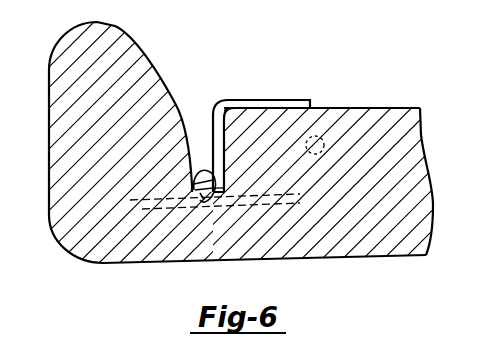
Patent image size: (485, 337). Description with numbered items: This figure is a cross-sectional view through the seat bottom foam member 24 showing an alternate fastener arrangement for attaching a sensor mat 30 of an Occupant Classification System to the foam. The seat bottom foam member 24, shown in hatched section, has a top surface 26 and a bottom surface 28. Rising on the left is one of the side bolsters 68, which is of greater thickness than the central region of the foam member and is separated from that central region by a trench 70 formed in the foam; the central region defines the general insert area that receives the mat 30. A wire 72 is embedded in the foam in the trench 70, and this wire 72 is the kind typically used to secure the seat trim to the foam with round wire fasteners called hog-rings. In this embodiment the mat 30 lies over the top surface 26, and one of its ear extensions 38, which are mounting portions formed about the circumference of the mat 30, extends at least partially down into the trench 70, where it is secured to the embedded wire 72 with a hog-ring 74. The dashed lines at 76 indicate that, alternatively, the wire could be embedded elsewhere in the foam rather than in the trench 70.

The seat bottom foam member 24 is at (422, 146).
The top surface 26 is at (373, 108).
The bottom surface 28 is at (343, 259).
The mat 30 is at (302, 100).
The ear extensions 38 is at (216, 179).
The side bolsters 68 is at (147, 83).
The trench 70 is at (203, 156).
The wire 72 is at (168, 207).
The hog-ring 74 is at (209, 200).
The dashed lines 76 is at (325, 143).